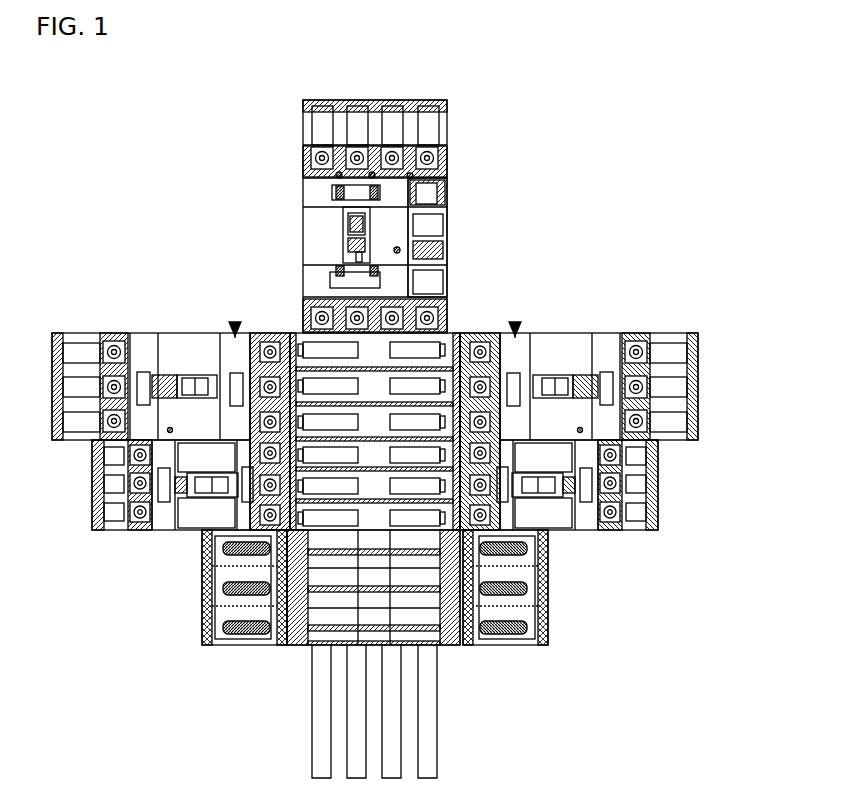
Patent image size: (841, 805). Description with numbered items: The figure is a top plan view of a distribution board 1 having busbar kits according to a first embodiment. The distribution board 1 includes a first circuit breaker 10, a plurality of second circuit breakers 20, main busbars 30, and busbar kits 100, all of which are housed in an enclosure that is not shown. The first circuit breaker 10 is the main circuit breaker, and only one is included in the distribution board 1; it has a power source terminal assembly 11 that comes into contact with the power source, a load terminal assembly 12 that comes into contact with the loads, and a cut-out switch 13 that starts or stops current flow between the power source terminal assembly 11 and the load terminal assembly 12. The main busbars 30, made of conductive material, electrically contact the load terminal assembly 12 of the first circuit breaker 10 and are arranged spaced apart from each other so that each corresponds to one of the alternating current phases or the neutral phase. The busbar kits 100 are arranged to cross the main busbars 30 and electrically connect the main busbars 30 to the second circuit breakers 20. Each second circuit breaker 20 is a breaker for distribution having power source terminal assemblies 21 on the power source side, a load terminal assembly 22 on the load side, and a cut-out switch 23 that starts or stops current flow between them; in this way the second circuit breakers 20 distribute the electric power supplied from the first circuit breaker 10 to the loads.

The distribution board 1 is at (166, 81).
The first circuit breaker 10 is at (458, 207).
The power source terminal assembly 11 is at (448, 128).
The load terminal assembly 12 is at (448, 275).
The cut-out switch 13 is at (343, 238).
The busbar kit 100 is at (447, 323).
The second circuit breaker 20 is at (110, 282).
The power source terminal assembly 21 is at (258, 333).
The load terminal assembly 22 is at (132, 348).
The cut-out switch 23 is at (195, 372).
The main busbar 30 is at (430, 712).